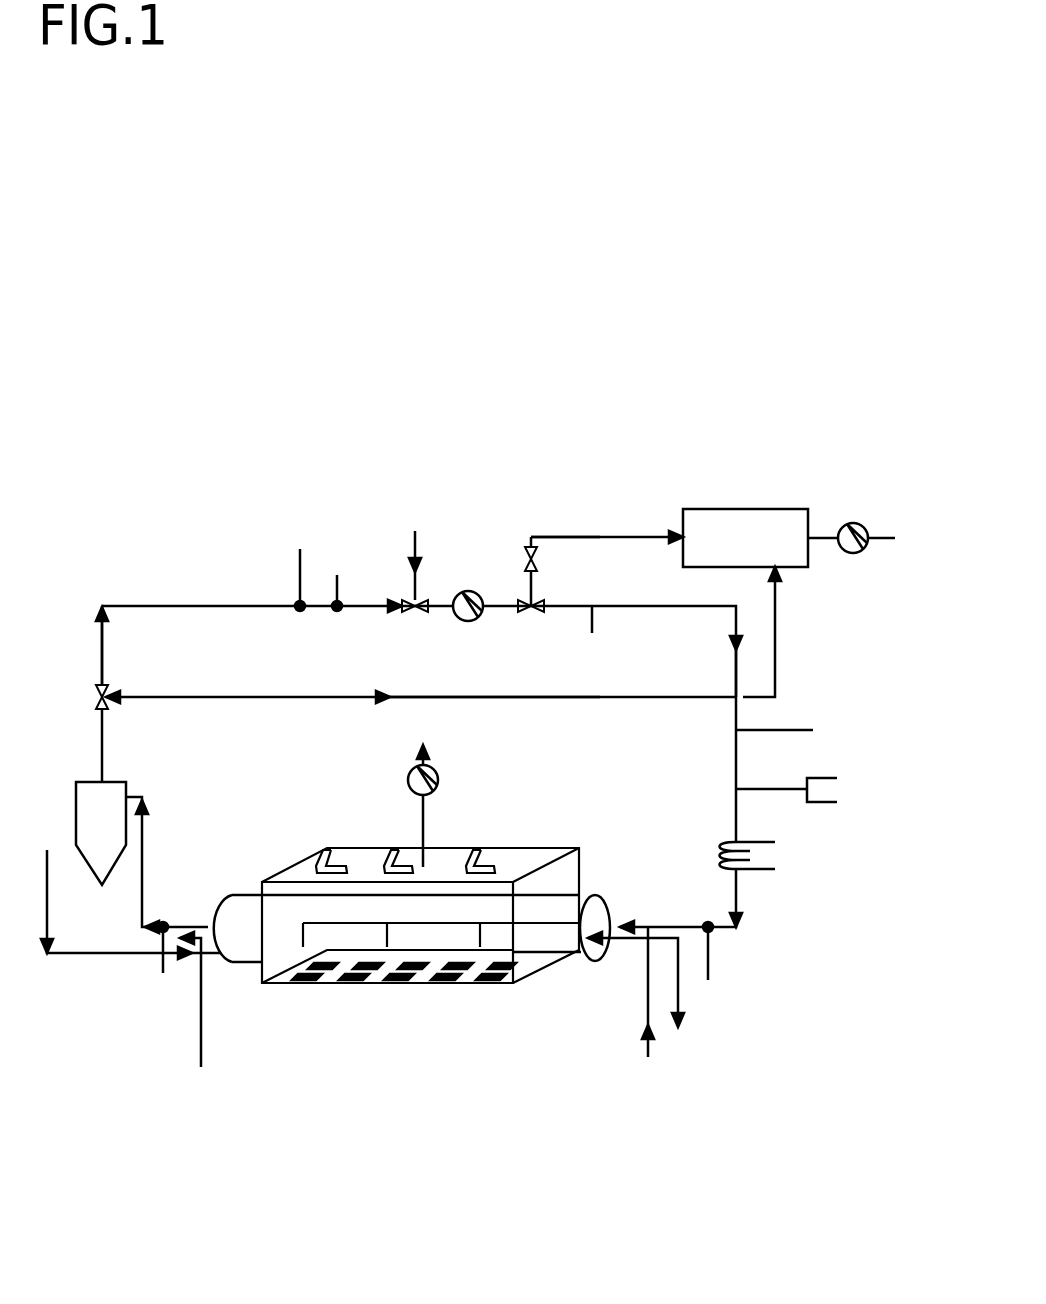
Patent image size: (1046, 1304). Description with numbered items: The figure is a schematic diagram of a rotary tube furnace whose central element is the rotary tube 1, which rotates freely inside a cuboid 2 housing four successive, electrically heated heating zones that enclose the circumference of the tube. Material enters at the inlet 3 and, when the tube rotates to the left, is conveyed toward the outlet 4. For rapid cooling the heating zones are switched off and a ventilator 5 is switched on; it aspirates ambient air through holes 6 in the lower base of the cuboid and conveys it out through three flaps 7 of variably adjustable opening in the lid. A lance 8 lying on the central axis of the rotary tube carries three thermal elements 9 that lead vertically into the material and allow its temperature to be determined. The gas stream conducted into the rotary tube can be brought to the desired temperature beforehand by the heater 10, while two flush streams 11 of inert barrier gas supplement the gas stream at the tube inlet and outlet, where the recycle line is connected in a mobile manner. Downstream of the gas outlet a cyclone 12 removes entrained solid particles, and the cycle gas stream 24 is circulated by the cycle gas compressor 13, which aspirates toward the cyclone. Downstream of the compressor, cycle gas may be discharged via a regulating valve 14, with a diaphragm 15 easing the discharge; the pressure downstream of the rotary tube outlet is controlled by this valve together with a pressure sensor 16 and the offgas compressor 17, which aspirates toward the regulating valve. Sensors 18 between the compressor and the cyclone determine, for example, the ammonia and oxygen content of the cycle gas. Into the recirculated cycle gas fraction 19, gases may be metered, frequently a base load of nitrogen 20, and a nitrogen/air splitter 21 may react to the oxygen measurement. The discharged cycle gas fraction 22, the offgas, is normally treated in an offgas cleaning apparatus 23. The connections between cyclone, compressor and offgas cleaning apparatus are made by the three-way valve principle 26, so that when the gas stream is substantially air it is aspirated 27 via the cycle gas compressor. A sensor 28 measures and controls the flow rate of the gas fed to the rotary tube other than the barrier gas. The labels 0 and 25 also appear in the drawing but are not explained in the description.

The valve 0 is at (508, 562).
The rotary tube 1 is at (578, 963).
The cuboid 2 is at (579, 848).
The inlet 3 is at (126, 889).
The outlet 4 is at (641, 998).
The ventilator 5 is at (442, 806).
The holes 6 is at (443, 985).
The flaps 7 is at (323, 850).
The lance 8 is at (303, 923).
The thermal elements 9 is at (382, 944).
The heater 10 is at (772, 856).
The flush streams 11 is at (425, 1015).
The cyclone 12 is at (142, 857).
The cycle gas compressor 13 is at (463, 626).
The regulating valve 14 is at (554, 562).
The diaphragm 15 is at (588, 638).
The pressure sensor 16 is at (163, 967).
The offgas compressor 17 is at (853, 558).
The sensors 18 is at (317, 563).
The cycle gas fraction 19 is at (711, 672).
The nitrogen base load metering 20 is at (804, 726).
The nitrogen/air splitter 21 is at (812, 792).
The discharged cycle gas fraction 22 is at (571, 522).
The offgas cleaning apparatus 23 is at (745, 538).
The cycle gas stream 24 is at (128, 653).
The line 25 is at (495, 679).
The three-way valve principle 26 is at (325, 669).
The air aspiration 27 is at (416, 550).
The sensor 28 is at (710, 968).